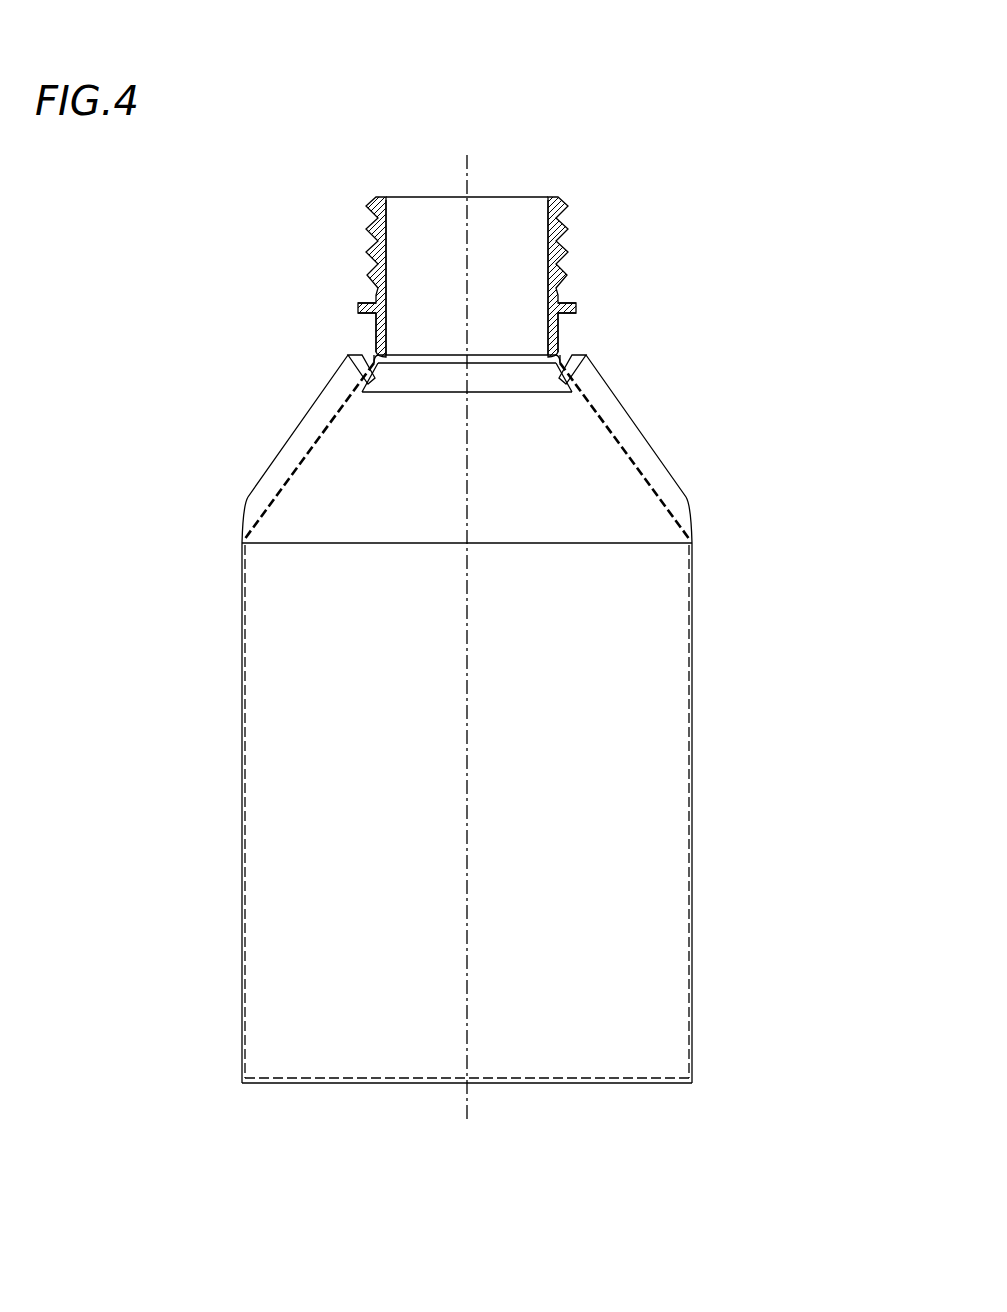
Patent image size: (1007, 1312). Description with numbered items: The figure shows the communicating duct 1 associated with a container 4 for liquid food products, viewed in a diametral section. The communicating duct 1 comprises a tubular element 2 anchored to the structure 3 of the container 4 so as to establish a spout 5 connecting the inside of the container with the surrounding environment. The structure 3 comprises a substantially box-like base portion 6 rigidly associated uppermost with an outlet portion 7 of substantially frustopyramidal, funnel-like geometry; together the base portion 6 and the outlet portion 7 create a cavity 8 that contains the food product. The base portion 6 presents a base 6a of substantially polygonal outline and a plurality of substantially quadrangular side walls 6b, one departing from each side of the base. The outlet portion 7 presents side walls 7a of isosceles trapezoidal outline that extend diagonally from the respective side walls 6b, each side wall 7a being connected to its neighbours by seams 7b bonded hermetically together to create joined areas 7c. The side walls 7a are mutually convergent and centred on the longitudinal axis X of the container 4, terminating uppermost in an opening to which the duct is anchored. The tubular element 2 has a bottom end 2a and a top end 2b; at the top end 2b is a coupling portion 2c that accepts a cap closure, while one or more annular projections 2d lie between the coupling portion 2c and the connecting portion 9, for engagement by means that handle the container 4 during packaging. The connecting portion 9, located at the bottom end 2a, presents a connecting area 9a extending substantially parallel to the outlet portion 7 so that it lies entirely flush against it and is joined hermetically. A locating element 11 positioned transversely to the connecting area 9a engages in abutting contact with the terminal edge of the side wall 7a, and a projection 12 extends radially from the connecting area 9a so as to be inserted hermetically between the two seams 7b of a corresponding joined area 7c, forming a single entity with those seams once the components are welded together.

The communicating duct 1 is at (592, 182).
The tubular element 2 is at (357, 280).
The bottom end 2a is at (573, 330).
The top end 2b is at (583, 223).
The coupling portion 2c is at (357, 222).
The annular projection 2d is at (575, 303).
The structure 3 is at (705, 560).
The container 4 is at (650, 660).
The spout 5 is at (495, 215).
The base portion 6 is at (479, 825).
The base 6a is at (660, 1083).
The side walls 6b is at (238, 1000).
The outlet portion 7 is at (263, 520).
The side walls 7a is at (297, 485).
The seams 7b is at (247, 500).
The joined areas 7c is at (263, 447).
The cavity 8 is at (288, 905).
The connecting portion 9 is at (375, 384).
The connecting area 9a is at (572, 358).
The locating element 11 is at (376, 356).
The projection 12 is at (352, 383).
The longitudinal axis X is at (467, 708).